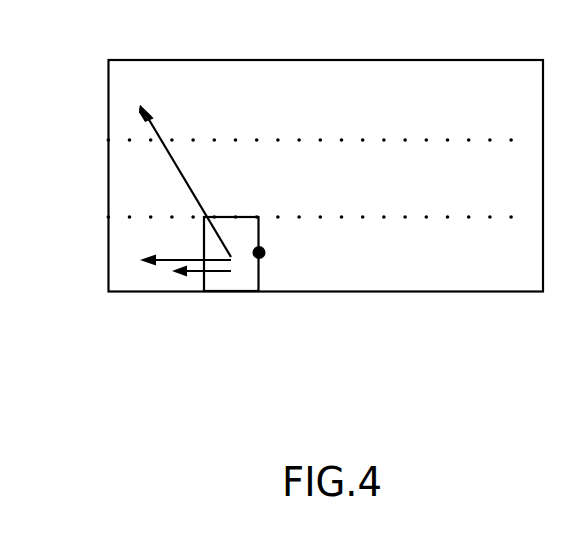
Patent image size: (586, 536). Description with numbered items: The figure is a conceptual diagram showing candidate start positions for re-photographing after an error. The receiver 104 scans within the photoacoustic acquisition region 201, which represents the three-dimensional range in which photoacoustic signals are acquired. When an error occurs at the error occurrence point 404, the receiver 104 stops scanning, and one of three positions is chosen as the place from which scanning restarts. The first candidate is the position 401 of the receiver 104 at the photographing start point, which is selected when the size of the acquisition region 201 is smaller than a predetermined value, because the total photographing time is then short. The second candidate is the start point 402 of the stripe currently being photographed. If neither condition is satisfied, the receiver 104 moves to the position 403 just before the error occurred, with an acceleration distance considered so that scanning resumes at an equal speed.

The photoacoustic acquisition region 201 is at (230, 59).
The receiver 104 is at (226, 294).
The position of the receiver at a photographing start point 401 is at (163, 145).
The start point of a stripe 402 is at (165, 257).
The position just before an error occurs 403 is at (195, 272).
The error occurrence point 404 is at (261, 259).